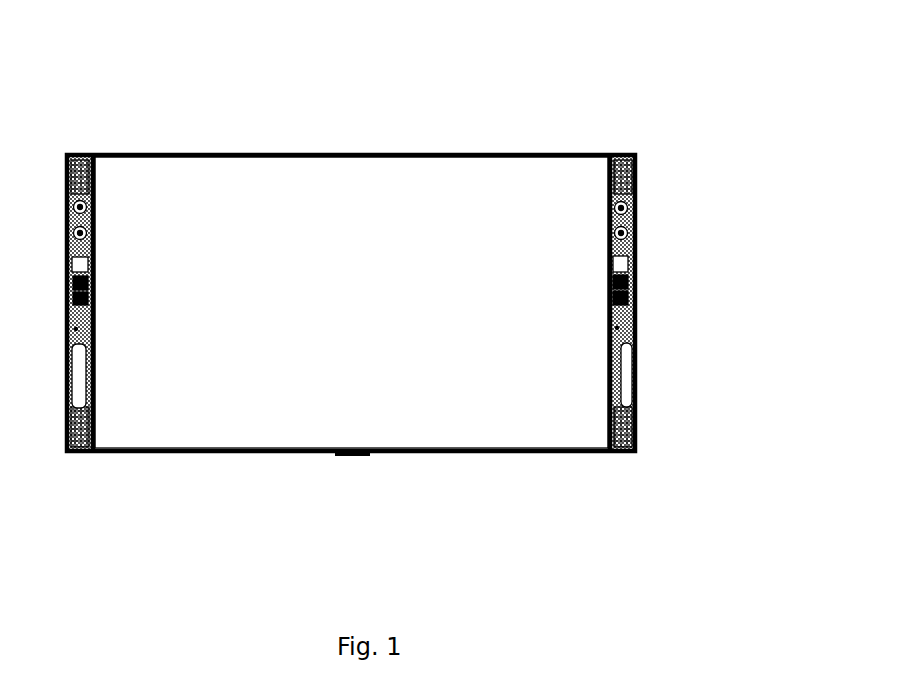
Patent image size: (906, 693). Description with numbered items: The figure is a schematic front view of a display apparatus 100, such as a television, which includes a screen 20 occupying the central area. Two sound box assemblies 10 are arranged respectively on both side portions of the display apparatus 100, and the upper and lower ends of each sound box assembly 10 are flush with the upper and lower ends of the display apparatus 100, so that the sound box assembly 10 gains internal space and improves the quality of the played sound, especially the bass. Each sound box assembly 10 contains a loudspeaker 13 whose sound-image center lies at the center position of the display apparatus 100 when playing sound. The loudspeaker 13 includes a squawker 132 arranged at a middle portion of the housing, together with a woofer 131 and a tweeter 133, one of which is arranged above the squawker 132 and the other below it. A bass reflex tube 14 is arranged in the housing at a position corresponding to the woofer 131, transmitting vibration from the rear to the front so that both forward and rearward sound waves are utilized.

The display apparatus 100 is at (57, 62).
The screen 20 is at (548, 208).
The sound box assembly 10 is at (80, 454).
The loudspeaker 13 is at (758, 210).
The woofer 131 is at (636, 238).
The squawker 132 is at (633, 287).
The tweeter 133 is at (633, 307).
The bass reflex tube 14 is at (633, 408).